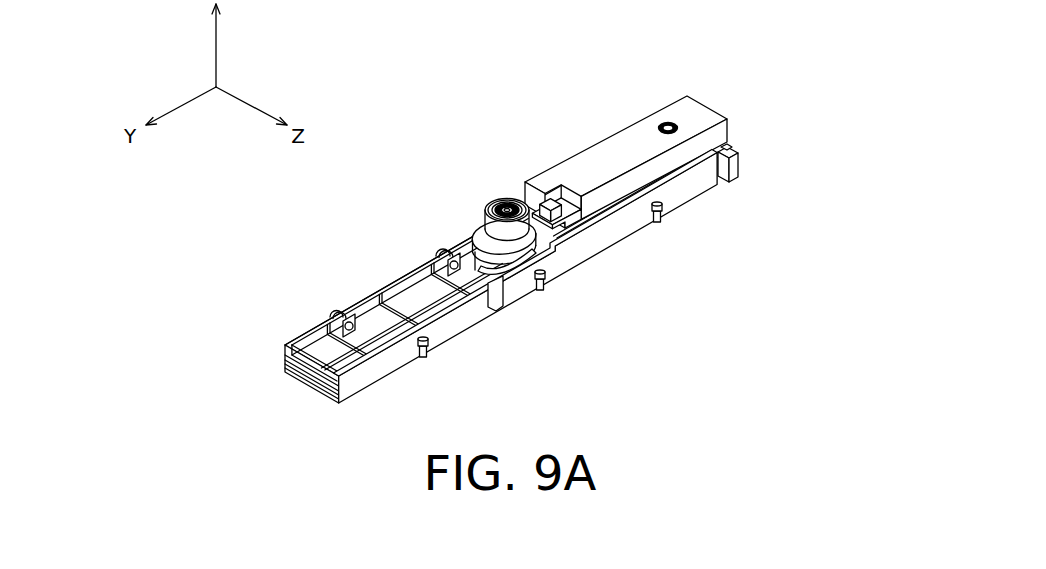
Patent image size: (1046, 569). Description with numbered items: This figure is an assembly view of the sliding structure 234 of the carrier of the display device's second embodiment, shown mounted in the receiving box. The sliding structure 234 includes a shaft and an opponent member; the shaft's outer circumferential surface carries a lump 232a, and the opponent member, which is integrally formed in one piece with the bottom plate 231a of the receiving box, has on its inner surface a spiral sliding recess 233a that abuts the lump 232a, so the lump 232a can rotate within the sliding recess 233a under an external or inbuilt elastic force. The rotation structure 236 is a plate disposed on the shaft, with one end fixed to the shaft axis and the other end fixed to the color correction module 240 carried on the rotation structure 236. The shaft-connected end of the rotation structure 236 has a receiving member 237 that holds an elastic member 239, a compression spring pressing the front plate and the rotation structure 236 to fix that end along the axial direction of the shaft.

The sliding structure 234 is at (456, 235).
The rotation structure 236 is at (590, 162).
The receiving member 237 is at (487, 207).
The elastic member 239 is at (510, 201).
The bottom plate 231a is at (690, 190).
The lump 232a is at (533, 256).
The sliding recess 233a is at (489, 271).
The color correction module 240 is at (744, 131).